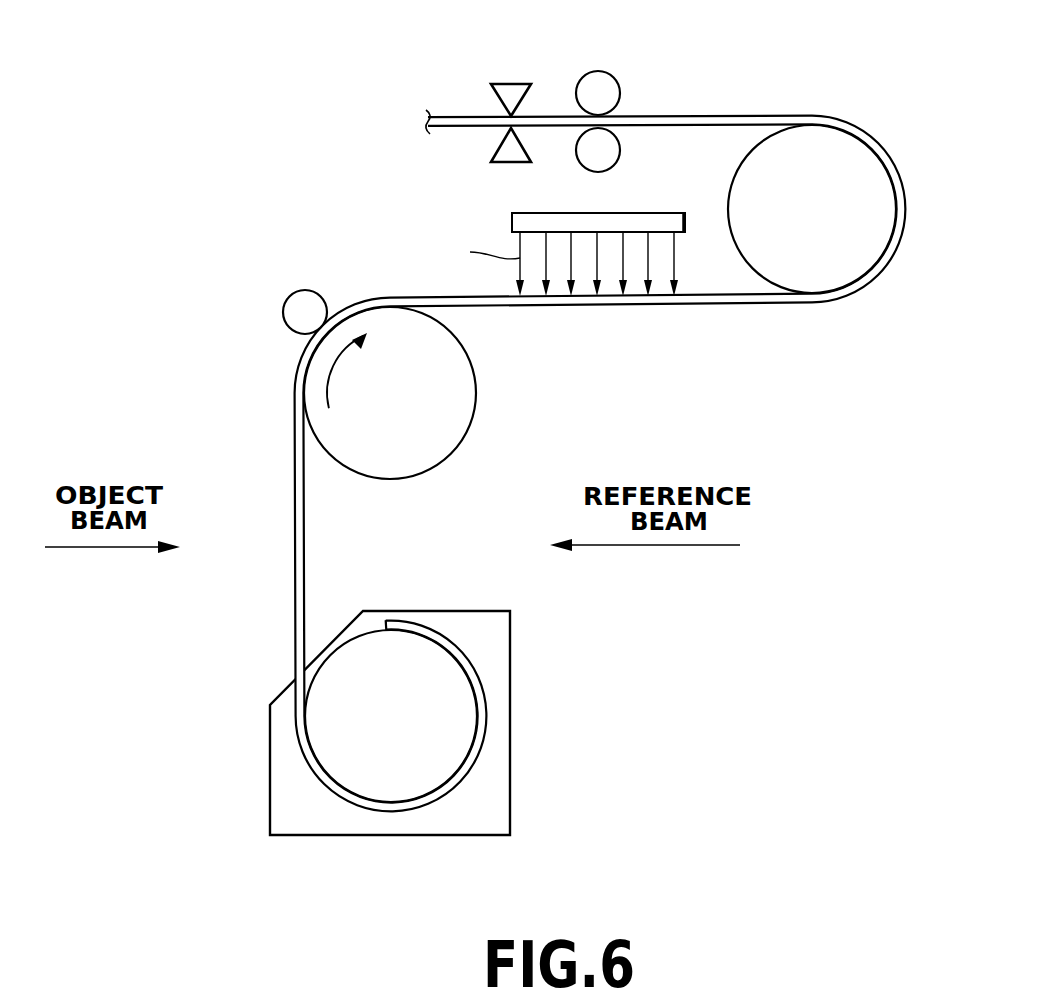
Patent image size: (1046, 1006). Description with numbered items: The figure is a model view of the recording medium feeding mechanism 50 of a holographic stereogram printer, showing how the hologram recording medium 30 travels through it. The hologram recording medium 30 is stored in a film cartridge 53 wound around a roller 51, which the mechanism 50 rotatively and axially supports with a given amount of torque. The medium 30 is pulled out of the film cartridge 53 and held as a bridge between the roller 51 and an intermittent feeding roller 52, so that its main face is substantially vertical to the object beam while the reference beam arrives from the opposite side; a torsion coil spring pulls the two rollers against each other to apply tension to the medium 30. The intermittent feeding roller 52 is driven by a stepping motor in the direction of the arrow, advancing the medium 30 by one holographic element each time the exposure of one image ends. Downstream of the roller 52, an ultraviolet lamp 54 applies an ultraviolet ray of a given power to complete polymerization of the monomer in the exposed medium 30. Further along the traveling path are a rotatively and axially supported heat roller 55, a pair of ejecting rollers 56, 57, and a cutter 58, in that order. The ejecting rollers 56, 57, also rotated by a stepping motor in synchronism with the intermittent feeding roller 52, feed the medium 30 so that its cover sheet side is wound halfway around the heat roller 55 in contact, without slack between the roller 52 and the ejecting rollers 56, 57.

The hologram recording medium 30 is at (316, 776).
The recording medium feeding mechanism 50 is at (800, 370).
The roller 51 is at (460, 700).
The intermittent feeding roller 52 is at (462, 393).
The film cartridge 53 is at (492, 773).
The ultraviolet lamp 54 is at (530, 221).
The heat roller 55 is at (870, 167).
The ejecting roller 56 is at (610, 92).
The ejecting roller 57 is at (610, 148).
The cutter 58 is at (520, 83).